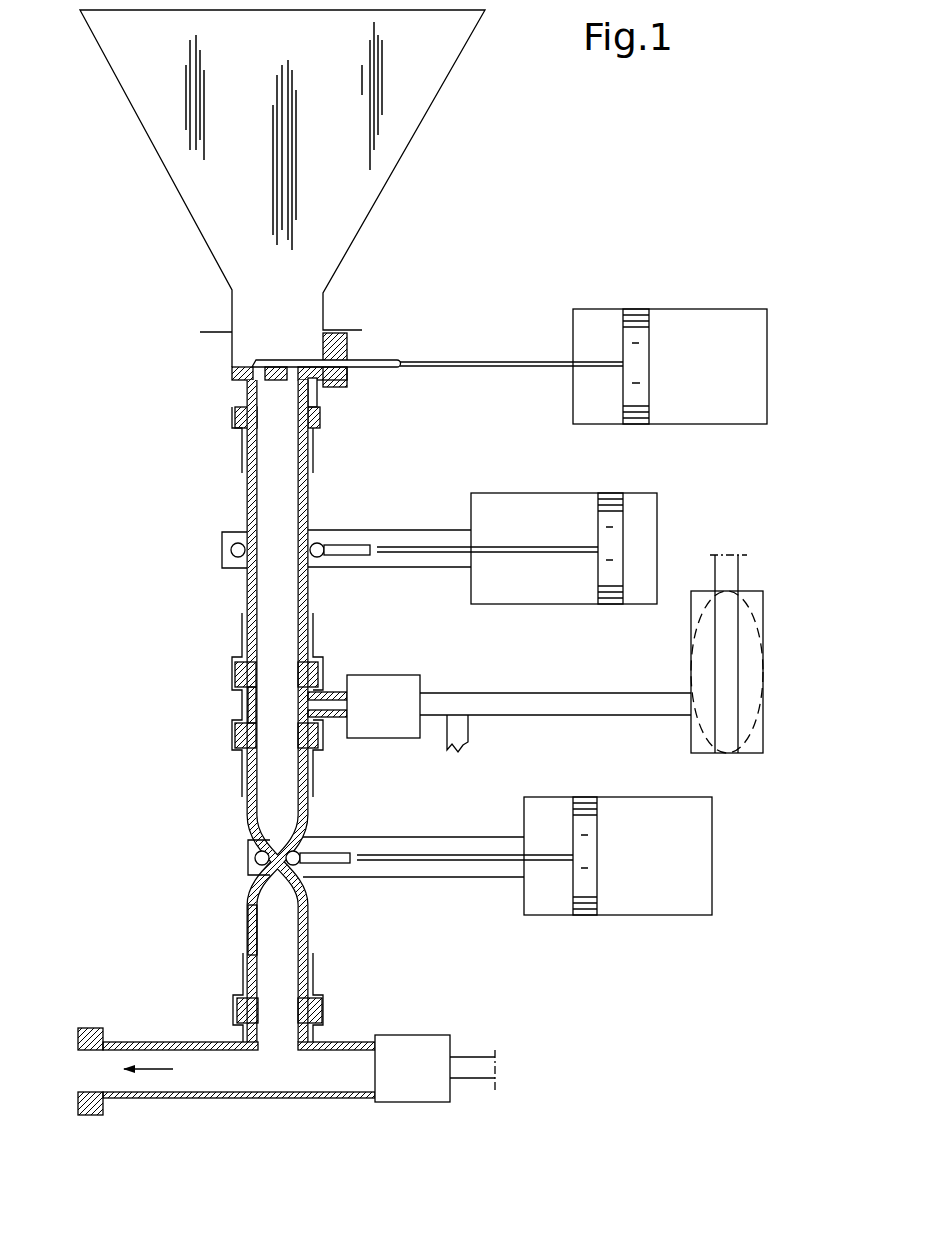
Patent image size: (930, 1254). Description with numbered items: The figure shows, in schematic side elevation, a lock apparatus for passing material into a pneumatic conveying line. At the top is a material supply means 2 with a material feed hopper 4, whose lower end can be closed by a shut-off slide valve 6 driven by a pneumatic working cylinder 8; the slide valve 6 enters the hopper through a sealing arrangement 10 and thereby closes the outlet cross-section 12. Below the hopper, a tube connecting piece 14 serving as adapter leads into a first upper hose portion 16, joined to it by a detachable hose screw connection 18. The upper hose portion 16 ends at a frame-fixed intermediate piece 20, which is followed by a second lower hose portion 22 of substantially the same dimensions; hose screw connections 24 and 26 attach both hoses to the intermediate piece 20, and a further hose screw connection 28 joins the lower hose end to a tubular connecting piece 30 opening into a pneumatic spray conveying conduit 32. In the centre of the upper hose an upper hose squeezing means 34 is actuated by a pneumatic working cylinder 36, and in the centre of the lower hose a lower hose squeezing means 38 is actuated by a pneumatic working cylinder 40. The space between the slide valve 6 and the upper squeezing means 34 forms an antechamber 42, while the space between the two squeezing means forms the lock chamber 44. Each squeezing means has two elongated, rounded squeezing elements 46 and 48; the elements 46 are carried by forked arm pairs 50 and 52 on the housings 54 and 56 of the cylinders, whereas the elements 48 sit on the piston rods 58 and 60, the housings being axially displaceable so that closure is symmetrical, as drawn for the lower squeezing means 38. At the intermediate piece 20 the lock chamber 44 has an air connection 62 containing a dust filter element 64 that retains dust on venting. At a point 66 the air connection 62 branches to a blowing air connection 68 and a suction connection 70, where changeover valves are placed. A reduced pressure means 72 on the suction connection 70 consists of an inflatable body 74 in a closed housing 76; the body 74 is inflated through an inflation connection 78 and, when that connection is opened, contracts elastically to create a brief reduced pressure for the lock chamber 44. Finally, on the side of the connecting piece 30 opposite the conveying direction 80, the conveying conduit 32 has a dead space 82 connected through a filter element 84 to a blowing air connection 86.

The material supply means 2 is at (364, 309).
The material feed hopper 4 is at (440, 88).
The shut-off slide valve 6 is at (400, 368).
The pneumatic working cylinder 8 is at (652, 302).
The sealing arrangement 10 is at (348, 347).
The outlet cross-section 12 is at (258, 386).
The tube connecting piece 14 is at (309, 392).
The first upper hose portion 16 is at (250, 500).
The hose screw connection 18 is at (235, 420).
The intermediate piece 20 is at (248, 705).
The second lower hose portion 22 is at (250, 905).
The hose screw connection 24 is at (242, 633).
The hose screw connection 26 is at (235, 738).
The hose screw connection 28 is at (245, 972).
The tubular connecting piece 30 is at (240, 1032).
The pneumatic spray conveying conduit 32 is at (233, 1098).
The upper hose squeezing means 34 is at (320, 526).
The pneumatic working cylinder 36 is at (539, 486).
The lower hose squeezing means 38 is at (248, 839).
The pneumatic working cylinder 40 is at (690, 920).
The antechamber 42 is at (277, 445).
The lock chamber 44 is at (275, 640).
The squeezing element 46 is at (231, 550).
The squeezing element 48 is at (322, 560).
The forked arm pair 50 is at (425, 530).
The forked arm pair 52 is at (473, 877).
The housing 54 is at (584, 493).
The housing 56 is at (560, 905).
The piston rod 58 is at (423, 553).
The piston rod 60 is at (408, 862).
The air connection 62 is at (335, 708).
The dust filter element 64 is at (401, 690).
The point 66 is at (458, 705).
The blowing air connection 68 is at (465, 747).
The suction connection 70 is at (632, 693).
The reduced pressure means 72 is at (762, 768).
The inflatable body 74 is at (708, 625).
The closed housing 76 is at (695, 752).
The inflation connection 78 is at (732, 572).
The conveying direction 80 is at (157, 1066).
The dead space 82 is at (335, 1070).
The filter element 84 is at (415, 1090).
The blowing air connection 86 is at (472, 1068).